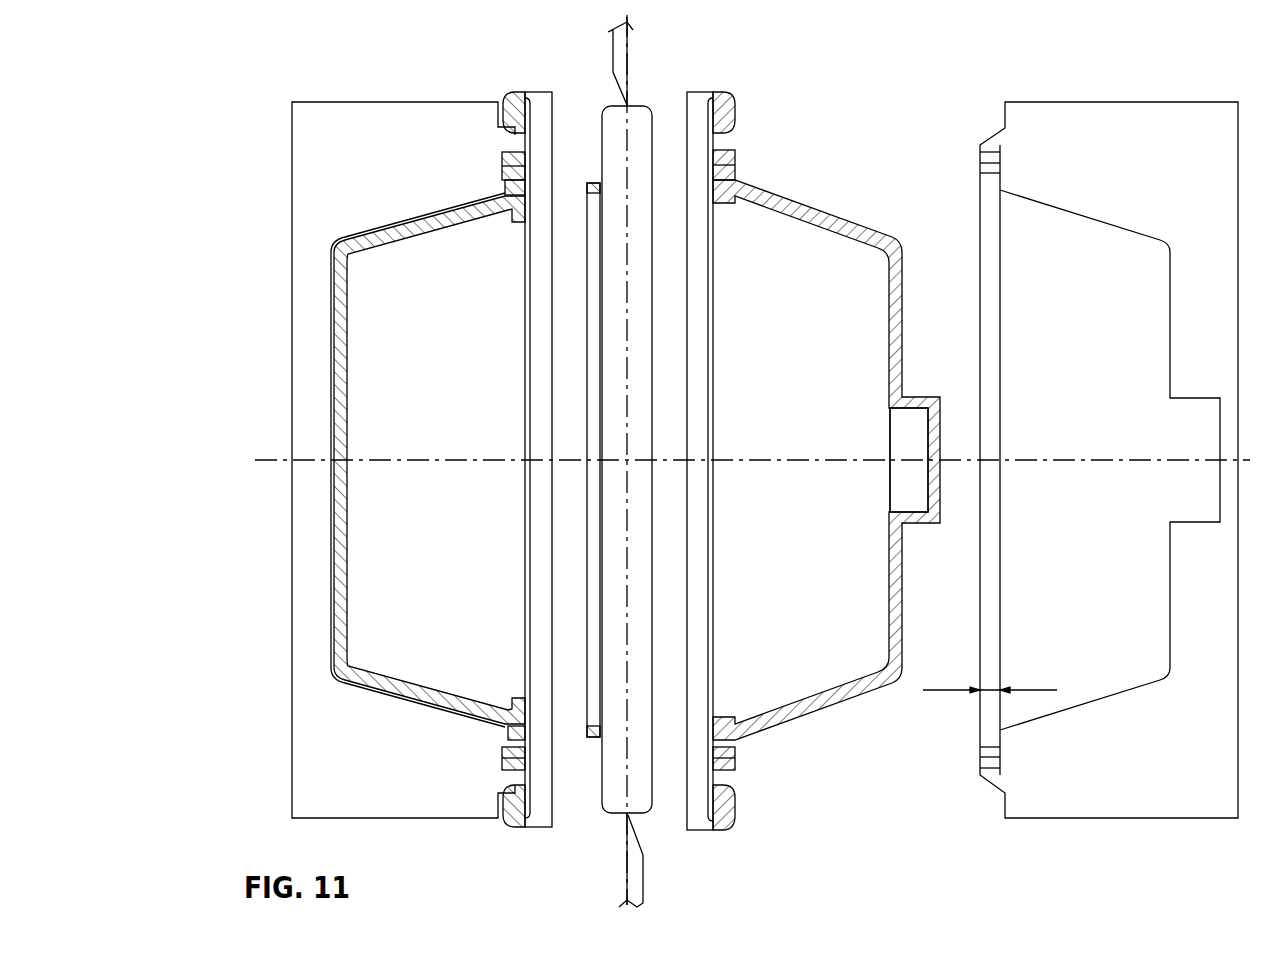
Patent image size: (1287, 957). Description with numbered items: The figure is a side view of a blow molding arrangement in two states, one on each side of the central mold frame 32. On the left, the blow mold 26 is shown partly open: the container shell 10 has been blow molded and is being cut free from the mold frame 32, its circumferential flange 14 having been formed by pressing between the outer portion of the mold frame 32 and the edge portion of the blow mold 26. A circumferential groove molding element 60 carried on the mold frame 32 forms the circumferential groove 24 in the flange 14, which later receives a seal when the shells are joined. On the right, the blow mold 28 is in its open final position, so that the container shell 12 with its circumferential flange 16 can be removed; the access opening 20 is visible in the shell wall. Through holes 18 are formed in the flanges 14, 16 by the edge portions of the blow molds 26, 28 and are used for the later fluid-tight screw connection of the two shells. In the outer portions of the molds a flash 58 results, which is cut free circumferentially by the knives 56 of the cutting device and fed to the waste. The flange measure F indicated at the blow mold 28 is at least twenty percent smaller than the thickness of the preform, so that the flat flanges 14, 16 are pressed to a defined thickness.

The container shell 10 is at (345, 358).
The container shell 12 is at (845, 228).
The circumferential flange 14 is at (500, 175).
The circumferential flange 16 is at (735, 180).
The through holes 18 is at (498, 157).
The access opening 20 is at (908, 400).
The circumferential groove 24 is at (518, 190).
The blow mold 26 is at (370, 157).
The blow mold 28 is at (1128, 162).
The mold frame 32 is at (640, 128).
The knives 56 is at (620, 50).
The flash 58 is at (520, 100).
The circumferential groove molding element 60 is at (590, 183).
The flange measure F is at (990, 690).